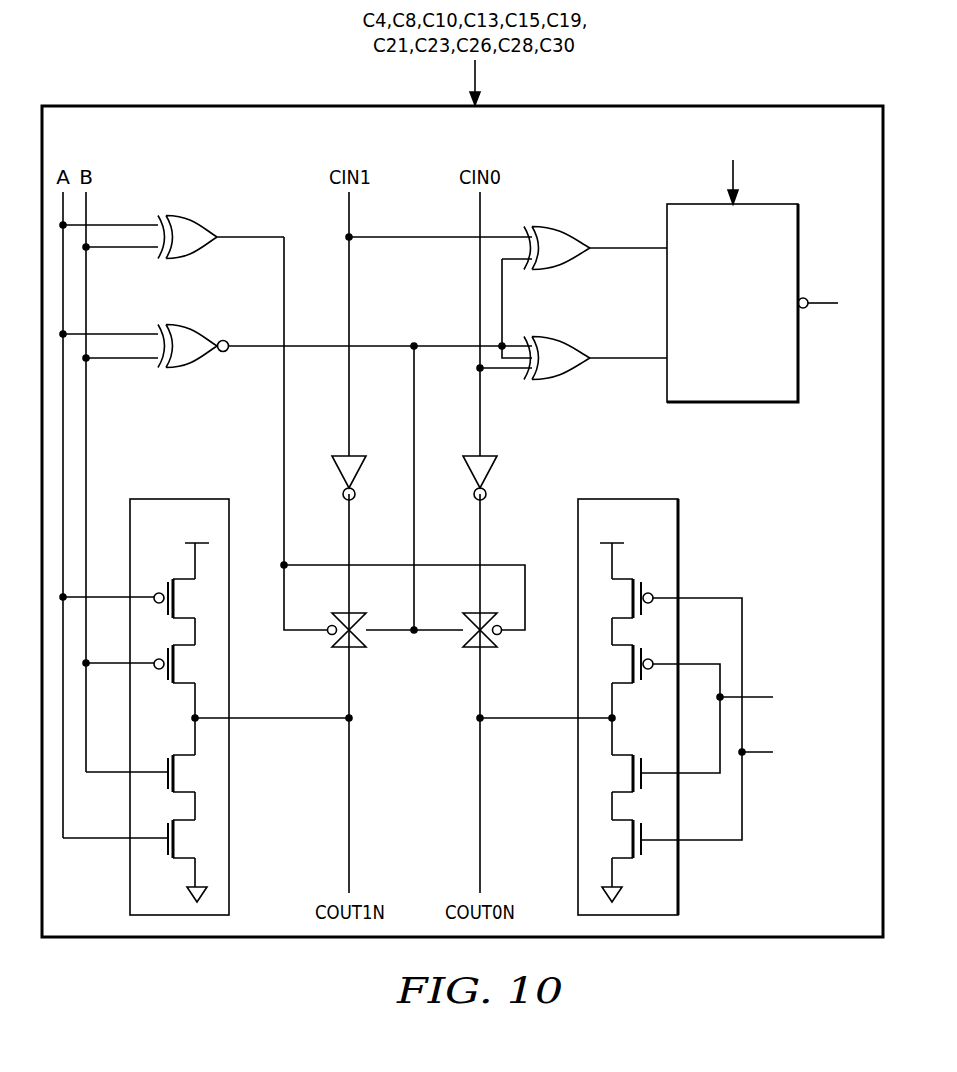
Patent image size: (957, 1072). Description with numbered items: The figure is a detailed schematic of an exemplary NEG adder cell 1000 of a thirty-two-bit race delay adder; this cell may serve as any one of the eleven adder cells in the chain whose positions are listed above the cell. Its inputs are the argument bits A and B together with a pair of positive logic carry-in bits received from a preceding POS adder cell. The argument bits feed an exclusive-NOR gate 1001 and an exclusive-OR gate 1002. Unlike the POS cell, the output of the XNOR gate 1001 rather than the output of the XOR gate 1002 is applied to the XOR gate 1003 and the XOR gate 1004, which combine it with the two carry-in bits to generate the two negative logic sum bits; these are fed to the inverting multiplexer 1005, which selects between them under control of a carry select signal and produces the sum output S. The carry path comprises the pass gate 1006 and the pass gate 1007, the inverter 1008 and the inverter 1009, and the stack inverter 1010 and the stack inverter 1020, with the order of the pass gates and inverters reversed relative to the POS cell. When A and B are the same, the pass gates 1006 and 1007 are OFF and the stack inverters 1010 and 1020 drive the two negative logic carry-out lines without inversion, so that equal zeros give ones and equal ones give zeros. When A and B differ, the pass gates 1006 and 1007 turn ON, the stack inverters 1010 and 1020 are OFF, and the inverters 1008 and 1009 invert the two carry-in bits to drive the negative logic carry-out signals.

The NEG adder cell 1000 is at (832, 106).
The exclusive-NOR gate 1001 is at (203, 362).
The exclusive-OR gate 1002 is at (205, 253).
The XOR gate 1003 is at (577, 264).
The XOR gate 1004 is at (577, 374).
The inverting multiplexer 1005 is at (708, 354).
The pass gate 1006 is at (330, 642).
The pass gate 1007 is at (462, 642).
The inverter 1008 is at (340, 460).
The inverter 1009 is at (490, 470).
The stack inverter 1010 is at (130, 882).
The stack inverter 1020 is at (678, 882).